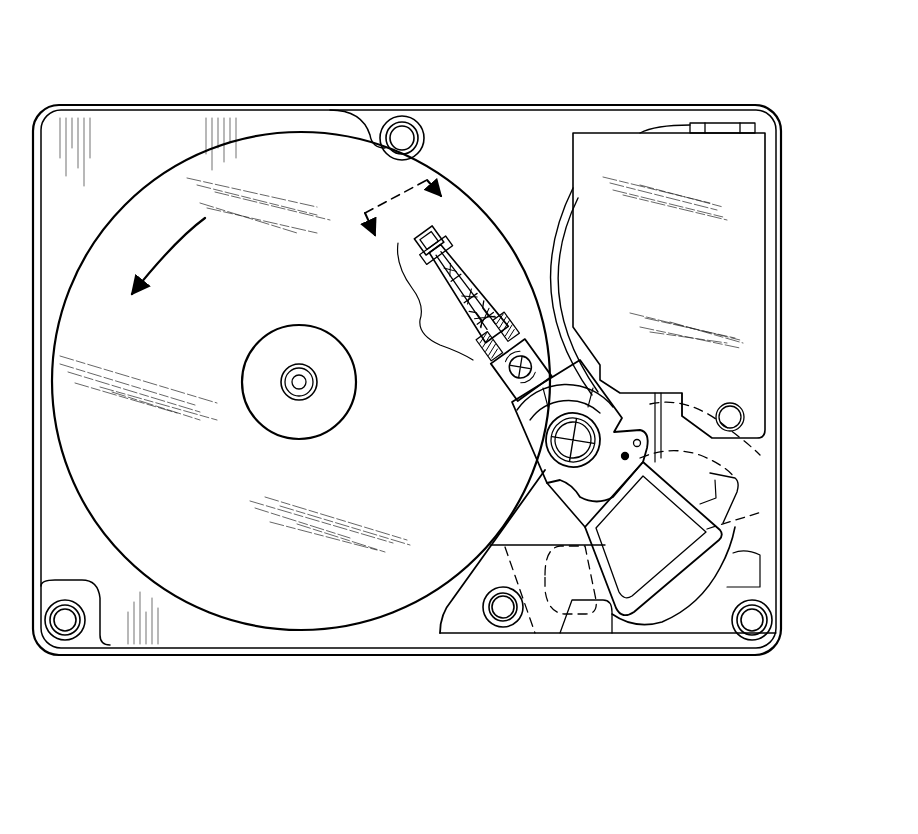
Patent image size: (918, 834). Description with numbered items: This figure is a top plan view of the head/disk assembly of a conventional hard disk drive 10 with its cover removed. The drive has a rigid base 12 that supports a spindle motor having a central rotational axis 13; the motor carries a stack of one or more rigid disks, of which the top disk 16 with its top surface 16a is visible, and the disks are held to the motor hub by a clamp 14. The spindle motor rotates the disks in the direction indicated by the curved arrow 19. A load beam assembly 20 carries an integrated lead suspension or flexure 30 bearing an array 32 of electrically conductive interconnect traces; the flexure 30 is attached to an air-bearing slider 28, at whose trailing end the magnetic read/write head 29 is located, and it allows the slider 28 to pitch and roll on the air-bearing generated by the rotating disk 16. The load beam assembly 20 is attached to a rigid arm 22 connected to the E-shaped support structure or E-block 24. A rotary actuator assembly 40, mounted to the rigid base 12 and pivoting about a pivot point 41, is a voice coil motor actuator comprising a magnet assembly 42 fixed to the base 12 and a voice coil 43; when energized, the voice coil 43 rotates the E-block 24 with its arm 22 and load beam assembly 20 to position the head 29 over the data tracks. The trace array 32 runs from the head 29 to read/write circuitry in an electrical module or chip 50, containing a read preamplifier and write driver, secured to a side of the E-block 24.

The hard disk drive 10 is at (104, 42).
The rigid base 12 is at (165, 657).
The central rotational axis 13 is at (299, 382).
The clamp 14 is at (286, 338).
The top disk 16 is at (322, 628).
The top surface 16a is at (258, 610).
The curved arrow 19 is at (170, 248).
The load beam assembly 20 is at (433, 301).
The rigid arm 22 is at (511, 356).
The E-block 24 is at (520, 428).
The air-bearing slider 28 is at (429, 240).
The read/write head 29 is at (436, 250).
The flexure 30 is at (466, 291).
The array of interconnect traces 32 is at (482, 314).
The rotary actuator assembly 40 is at (522, 505).
The pivot point 41 is at (572, 439).
The magnet assembly 42 is at (675, 440).
The voice coil 43 is at (735, 528).
The electrical module or chip 50 is at (618, 395).